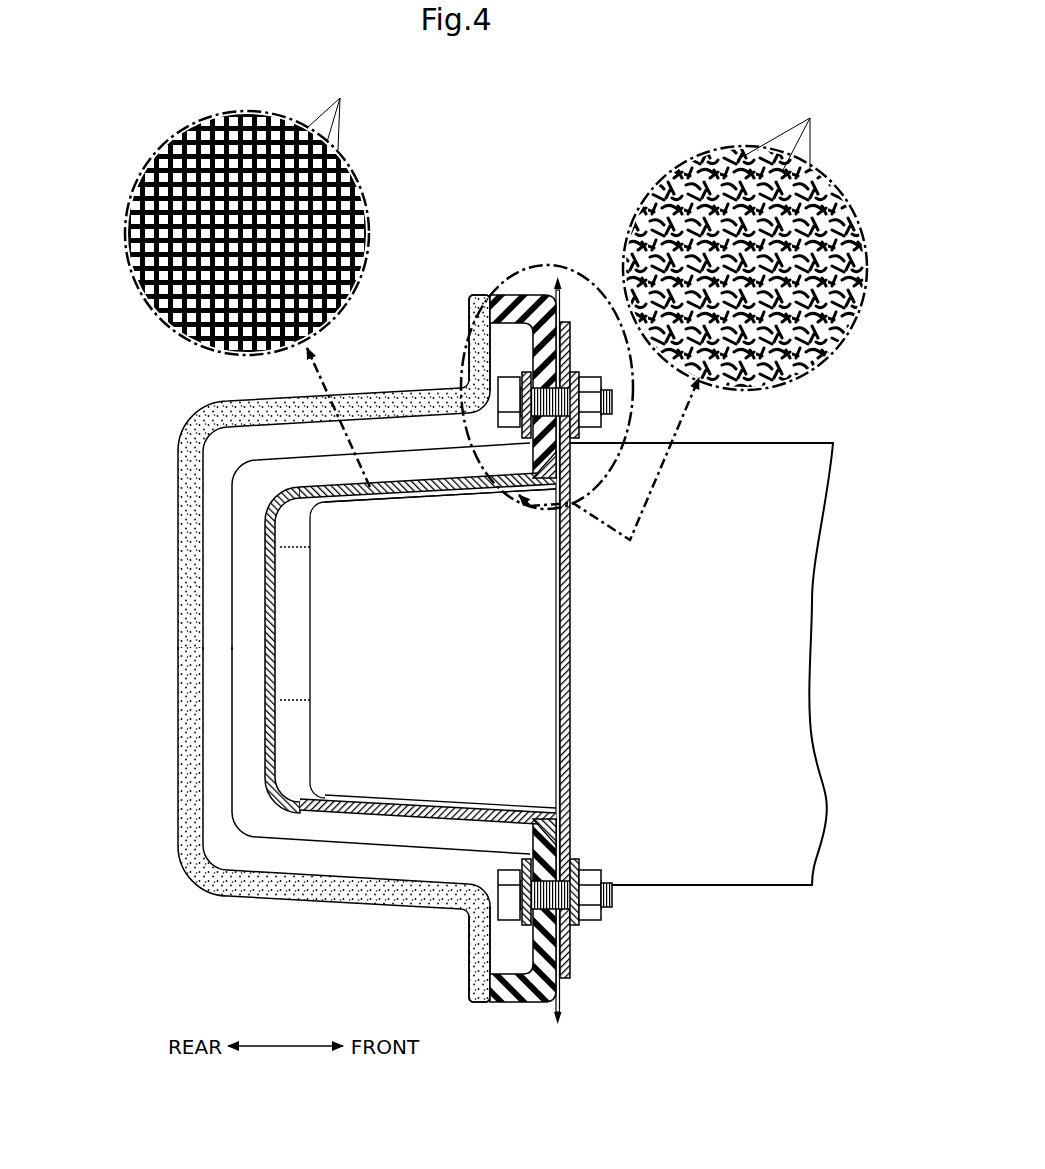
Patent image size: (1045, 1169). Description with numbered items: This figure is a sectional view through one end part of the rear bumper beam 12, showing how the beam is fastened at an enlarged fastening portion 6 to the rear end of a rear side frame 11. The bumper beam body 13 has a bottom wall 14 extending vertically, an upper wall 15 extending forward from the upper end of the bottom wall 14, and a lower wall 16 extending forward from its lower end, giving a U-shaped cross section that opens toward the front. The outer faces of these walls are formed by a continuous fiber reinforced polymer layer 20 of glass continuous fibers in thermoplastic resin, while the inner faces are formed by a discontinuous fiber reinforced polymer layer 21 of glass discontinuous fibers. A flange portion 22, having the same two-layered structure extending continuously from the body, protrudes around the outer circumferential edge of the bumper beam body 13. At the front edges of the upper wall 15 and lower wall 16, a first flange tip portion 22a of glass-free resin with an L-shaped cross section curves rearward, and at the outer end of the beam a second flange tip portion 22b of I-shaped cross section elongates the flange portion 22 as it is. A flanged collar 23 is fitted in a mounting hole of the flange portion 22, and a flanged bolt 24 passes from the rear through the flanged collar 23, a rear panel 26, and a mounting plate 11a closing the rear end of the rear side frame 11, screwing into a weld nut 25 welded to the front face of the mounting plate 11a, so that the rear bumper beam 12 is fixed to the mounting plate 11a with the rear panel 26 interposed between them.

The enlarged fastening portion 6 is at (491, 281).
The rear side frame 11 is at (750, 890).
The mounting plate 11a is at (572, 660).
The rear bumper beam 12 is at (162, 494).
The bumper beam body 13 is at (522, 505).
The bottom wall 14 is at (383, 605).
The upper wall 15 is at (390, 563).
The lower wall 16 is at (508, 746).
The continuous fiber reinforced polymer layer 20 is at (224, 116).
The discontinuous fiber reinforced polymer layer 21 is at (700, 190).
The flange portion 22 is at (527, 458).
The first flange tip portion 22a is at (515, 295).
The second flange tip portion 22b is at (186, 693).
The flanged collar 23 is at (562, 457).
The flanged bolt 24 is at (480, 400).
The weld nut 25 is at (582, 377).
The rear panel 26 is at (562, 298).